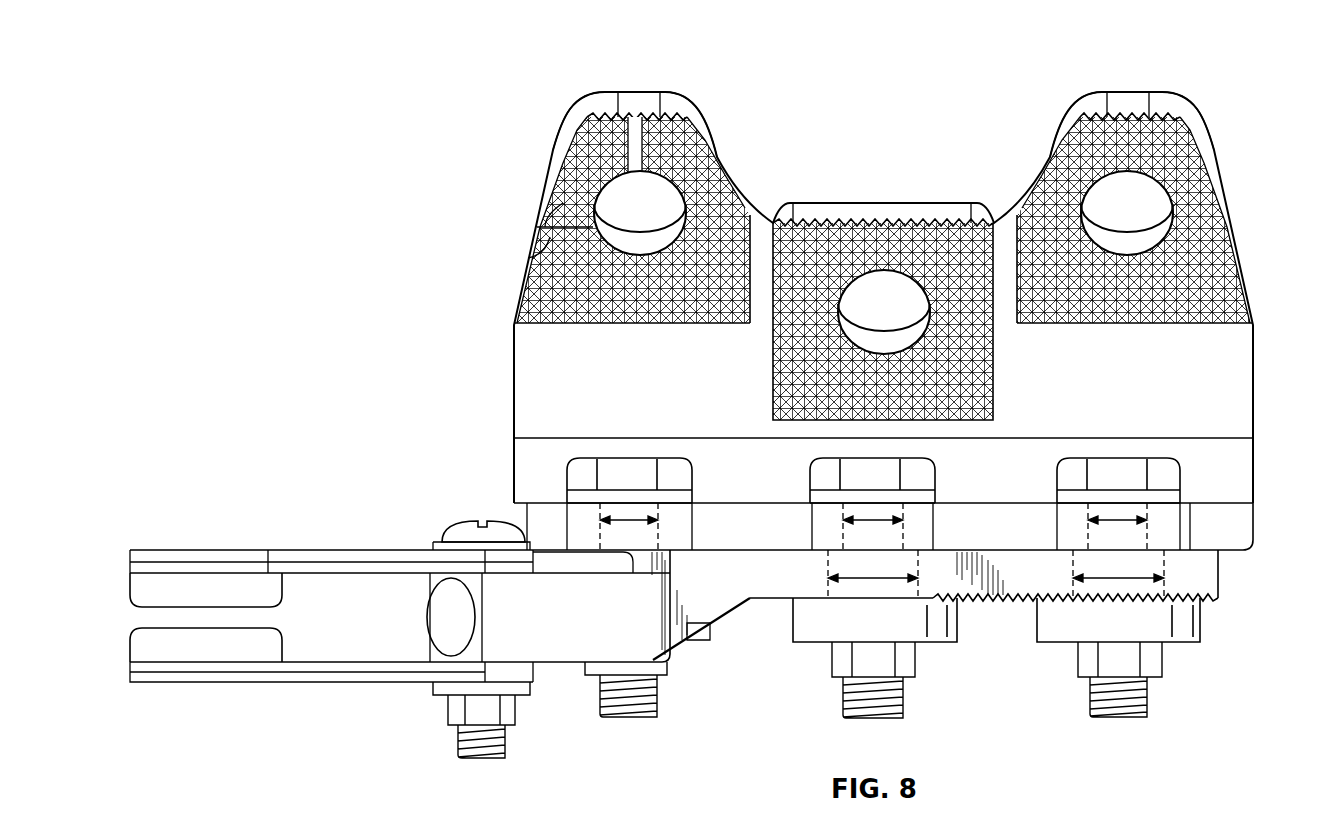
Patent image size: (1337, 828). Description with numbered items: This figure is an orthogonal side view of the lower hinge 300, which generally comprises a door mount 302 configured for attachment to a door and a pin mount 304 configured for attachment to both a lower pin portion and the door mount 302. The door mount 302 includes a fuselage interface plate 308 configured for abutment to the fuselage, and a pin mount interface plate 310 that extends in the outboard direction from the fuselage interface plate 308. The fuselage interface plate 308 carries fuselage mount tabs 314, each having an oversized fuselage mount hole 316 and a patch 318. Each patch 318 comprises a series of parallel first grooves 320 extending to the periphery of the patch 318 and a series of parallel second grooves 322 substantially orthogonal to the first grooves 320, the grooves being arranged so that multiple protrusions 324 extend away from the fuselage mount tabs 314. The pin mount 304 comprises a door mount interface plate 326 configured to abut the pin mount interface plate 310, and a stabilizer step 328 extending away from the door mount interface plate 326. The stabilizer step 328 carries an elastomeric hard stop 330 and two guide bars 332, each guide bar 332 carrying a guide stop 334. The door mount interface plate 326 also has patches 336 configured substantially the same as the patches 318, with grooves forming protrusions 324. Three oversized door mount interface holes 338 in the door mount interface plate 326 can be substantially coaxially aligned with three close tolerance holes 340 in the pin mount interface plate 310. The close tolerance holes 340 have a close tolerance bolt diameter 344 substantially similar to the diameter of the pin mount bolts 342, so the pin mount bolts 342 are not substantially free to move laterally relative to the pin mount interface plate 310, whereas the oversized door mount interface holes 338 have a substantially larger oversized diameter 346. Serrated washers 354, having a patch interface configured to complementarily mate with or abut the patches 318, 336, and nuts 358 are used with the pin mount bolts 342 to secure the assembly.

The lower hinge 300 is at (407, 71).
The door mount 302 is at (1255, 350).
The pin mount 304 is at (1220, 590).
The fuselage interface plate 308 is at (1255, 410).
The pin mount interface plate 310 is at (1245, 540).
The fuselage mount tabs 314 is at (597, 98).
The oversized fuselage mount holes 316 is at (645, 190).
The patch 318 is at (565, 180).
The first grooves 320 is at (657, 113).
The second grooves 322 is at (545, 225).
The protrusions 324 is at (690, 120).
The door mount interface plate 326 is at (1180, 580).
The stabilizer step 328 is at (574, 655).
The elastomeric hard stop 330 is at (428, 622).
The guide bars 332 is at (200, 560).
The guide stop 334 is at (145, 647).
The patches 336 is at (968, 600).
The oversized door mount interface holes 338 is at (828, 568).
The close tolerance holes 340 is at (660, 530).
The pin mount bolts 342 is at (656, 459).
The close tolerance bolt diameter 344 is at (633, 518).
The oversized diameter 346 is at (1123, 577).
The serrated washers 354 is at (790, 620).
The nuts 358 is at (658, 680).